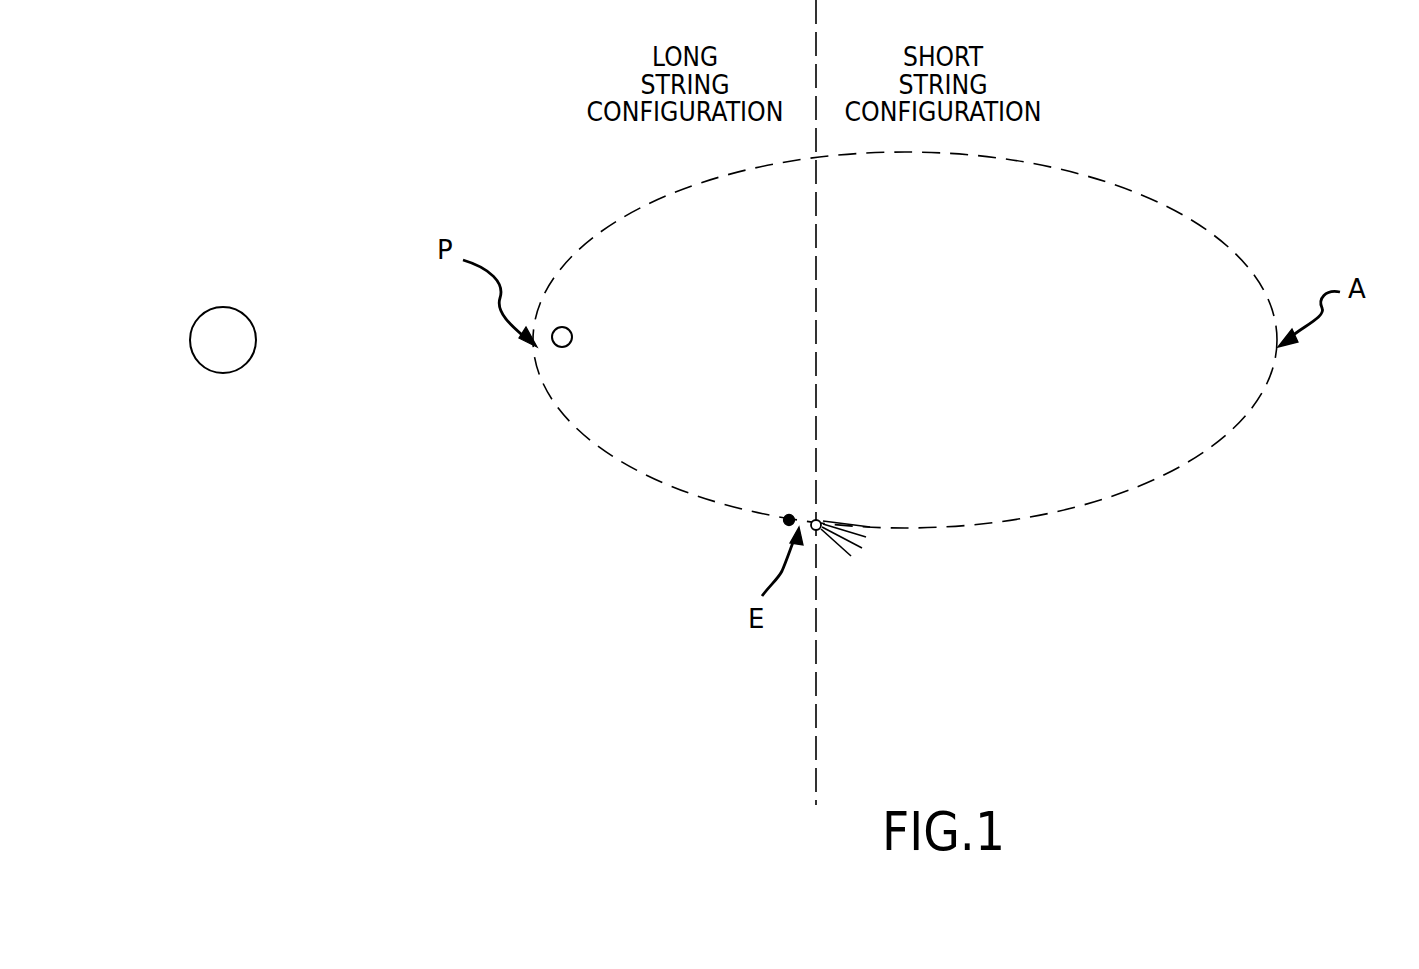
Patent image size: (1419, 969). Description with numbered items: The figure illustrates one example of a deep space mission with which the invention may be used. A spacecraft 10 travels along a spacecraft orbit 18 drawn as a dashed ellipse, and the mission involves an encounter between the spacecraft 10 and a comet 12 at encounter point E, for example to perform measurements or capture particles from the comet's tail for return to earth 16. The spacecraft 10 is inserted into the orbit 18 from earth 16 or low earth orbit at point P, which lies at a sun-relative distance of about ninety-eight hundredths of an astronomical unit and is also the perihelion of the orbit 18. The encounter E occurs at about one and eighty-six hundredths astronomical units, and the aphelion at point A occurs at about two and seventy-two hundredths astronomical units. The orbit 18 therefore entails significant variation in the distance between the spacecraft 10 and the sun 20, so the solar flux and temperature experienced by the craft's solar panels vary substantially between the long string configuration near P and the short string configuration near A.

The spacecraft 10 is at (788, 512).
The comet 12 is at (820, 518).
The earth 16 is at (569, 329).
The spacecraft orbit 18 is at (1065, 509).
The sun 20 is at (232, 309).